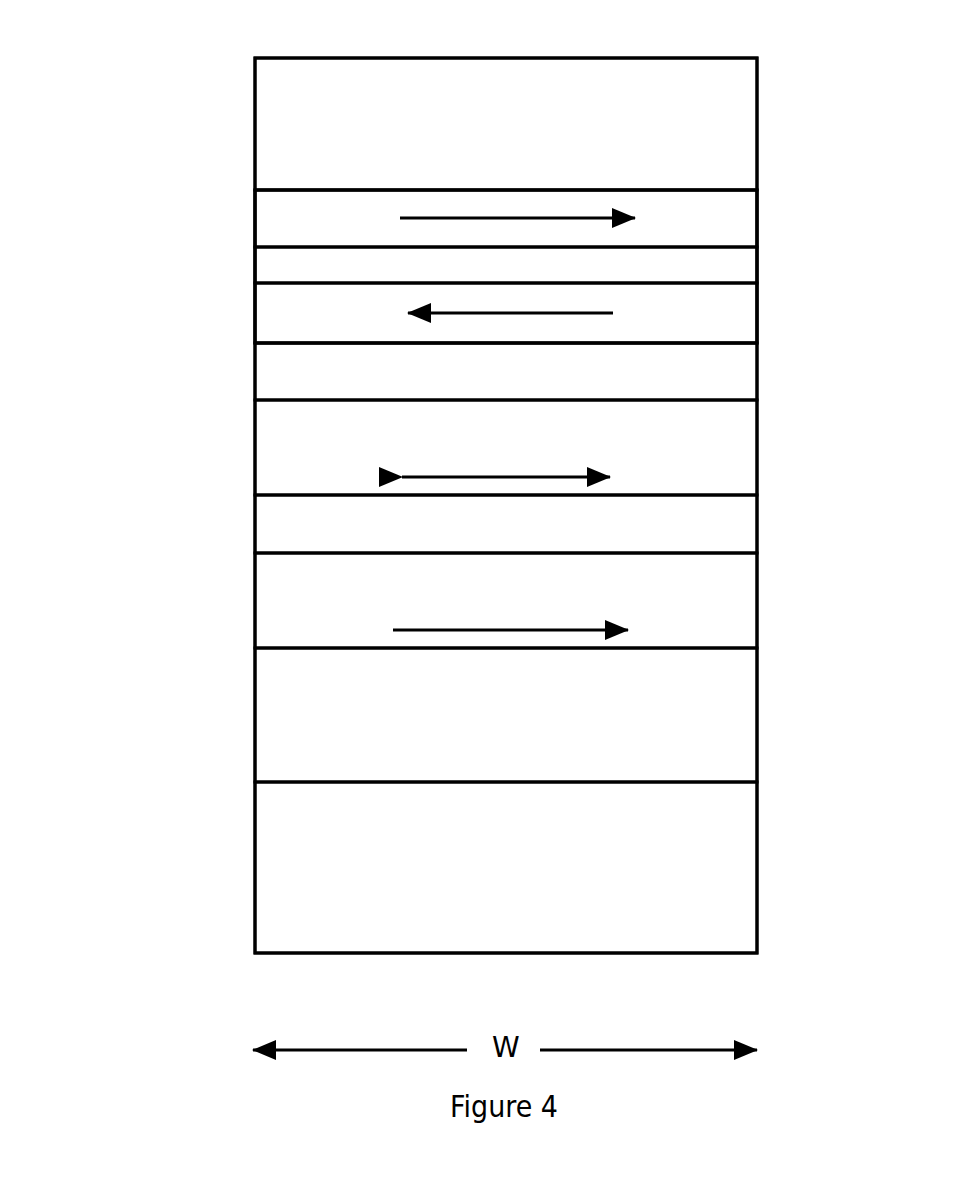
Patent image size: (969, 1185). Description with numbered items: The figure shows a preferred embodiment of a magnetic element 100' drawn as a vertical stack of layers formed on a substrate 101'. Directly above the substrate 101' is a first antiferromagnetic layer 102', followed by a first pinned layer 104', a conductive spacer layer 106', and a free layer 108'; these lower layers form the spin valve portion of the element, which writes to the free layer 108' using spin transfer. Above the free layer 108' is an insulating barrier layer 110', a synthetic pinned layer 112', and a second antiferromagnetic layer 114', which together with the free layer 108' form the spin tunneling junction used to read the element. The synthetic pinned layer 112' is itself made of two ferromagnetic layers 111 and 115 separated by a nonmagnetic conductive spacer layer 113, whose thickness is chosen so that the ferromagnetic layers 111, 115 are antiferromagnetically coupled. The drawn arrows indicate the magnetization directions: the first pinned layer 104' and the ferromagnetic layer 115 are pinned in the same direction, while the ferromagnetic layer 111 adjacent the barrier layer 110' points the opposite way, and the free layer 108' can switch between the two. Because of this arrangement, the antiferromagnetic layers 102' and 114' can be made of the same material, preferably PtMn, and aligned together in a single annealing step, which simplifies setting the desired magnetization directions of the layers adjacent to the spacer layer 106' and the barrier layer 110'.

The magnetic element 100' is at (506, 478).
The substrate 101' is at (456, 867).
The first antiferromagnetic layer 102' is at (558, 715).
The first pinned layer 104' is at (456, 593).
The conductive spacer layer 106' is at (558, 517).
The free layer 108' is at (456, 447).
The insulating barrier layer 110' is at (558, 363).
The ferromagnetic layer 111 is at (255, 325).
The synthetic pinned layer 112' is at (399, 266).
The nonmagnetic conductive spacer layer 113 is at (757, 256).
The second antiferromagnetic layer 114' is at (558, 124).
The ferromagnetic layer 115 is at (255, 225).